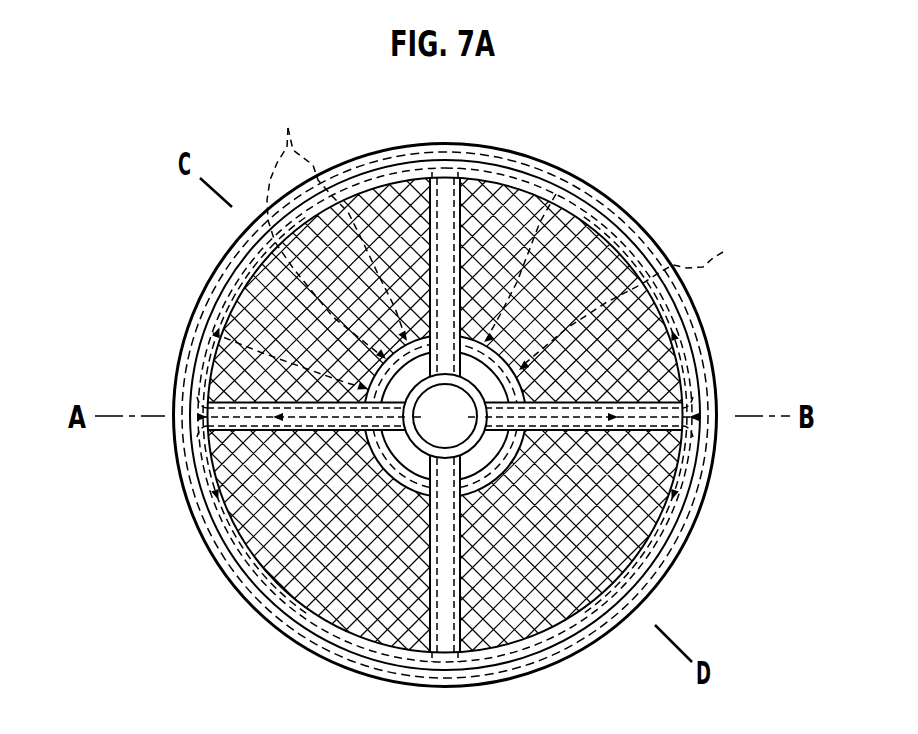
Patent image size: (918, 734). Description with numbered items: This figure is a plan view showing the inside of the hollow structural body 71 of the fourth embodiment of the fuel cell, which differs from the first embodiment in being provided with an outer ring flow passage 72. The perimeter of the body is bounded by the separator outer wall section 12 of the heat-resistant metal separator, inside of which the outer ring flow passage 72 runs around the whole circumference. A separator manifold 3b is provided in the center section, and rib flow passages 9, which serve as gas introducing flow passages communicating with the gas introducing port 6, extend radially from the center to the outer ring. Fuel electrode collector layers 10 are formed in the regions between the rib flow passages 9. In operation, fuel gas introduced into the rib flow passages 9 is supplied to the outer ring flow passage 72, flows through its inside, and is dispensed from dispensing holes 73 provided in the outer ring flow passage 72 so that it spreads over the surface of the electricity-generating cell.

The hollow structural body 71 is at (543, 150).
The outer ring flow passage 72 is at (572, 193).
The dispensing holes 73 is at (484, 239).
The separator manifold 3b is at (605, 268).
The fuel electrode collector layers 10 is at (652, 317).
The rib flow passages 9 is at (623, 420).
The gas introducing port 6 is at (425, 433).
The separator outer wall section 12 is at (598, 638).